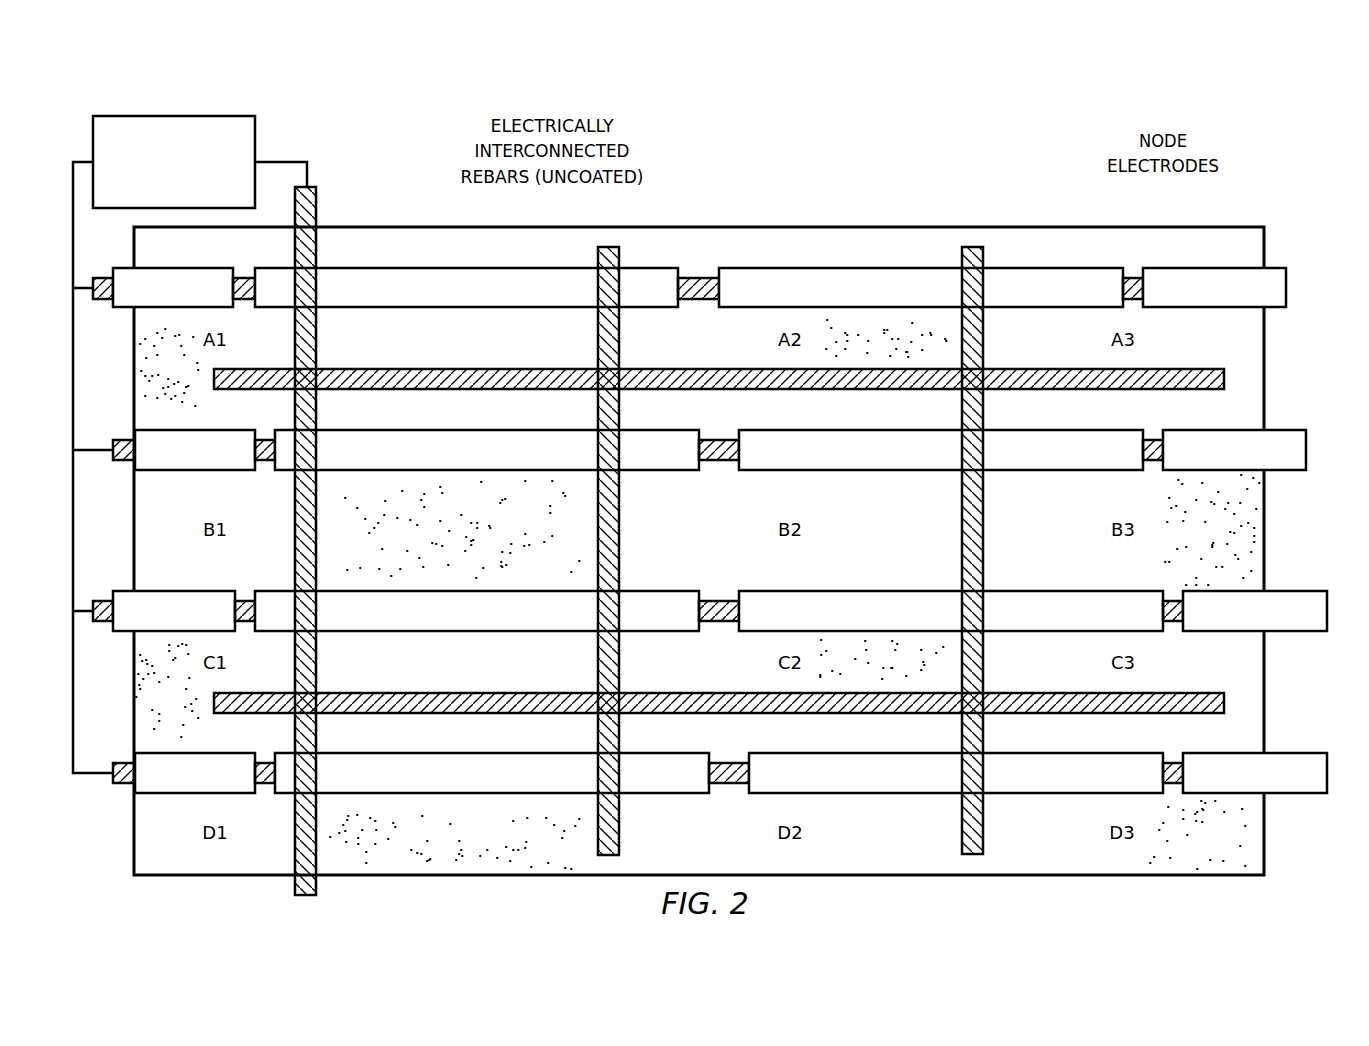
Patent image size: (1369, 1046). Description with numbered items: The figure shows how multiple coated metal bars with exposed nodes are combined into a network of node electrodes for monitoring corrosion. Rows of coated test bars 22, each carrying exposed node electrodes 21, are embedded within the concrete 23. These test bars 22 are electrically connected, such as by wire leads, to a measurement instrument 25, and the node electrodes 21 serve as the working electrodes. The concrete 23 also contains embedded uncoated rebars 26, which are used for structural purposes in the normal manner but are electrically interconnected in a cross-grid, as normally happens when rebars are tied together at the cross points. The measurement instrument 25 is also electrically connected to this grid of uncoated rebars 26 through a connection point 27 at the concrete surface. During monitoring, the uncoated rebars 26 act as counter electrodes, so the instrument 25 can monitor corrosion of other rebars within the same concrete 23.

The node electrodes 21 is at (1133, 278).
The coated test bars 22 is at (1293, 795).
The concrete 23 is at (697, 237).
The measurement instrument 25 is at (257, 136).
The uncoated rebars 26 is at (598, 258).
The connection point 27 is at (306, 187).